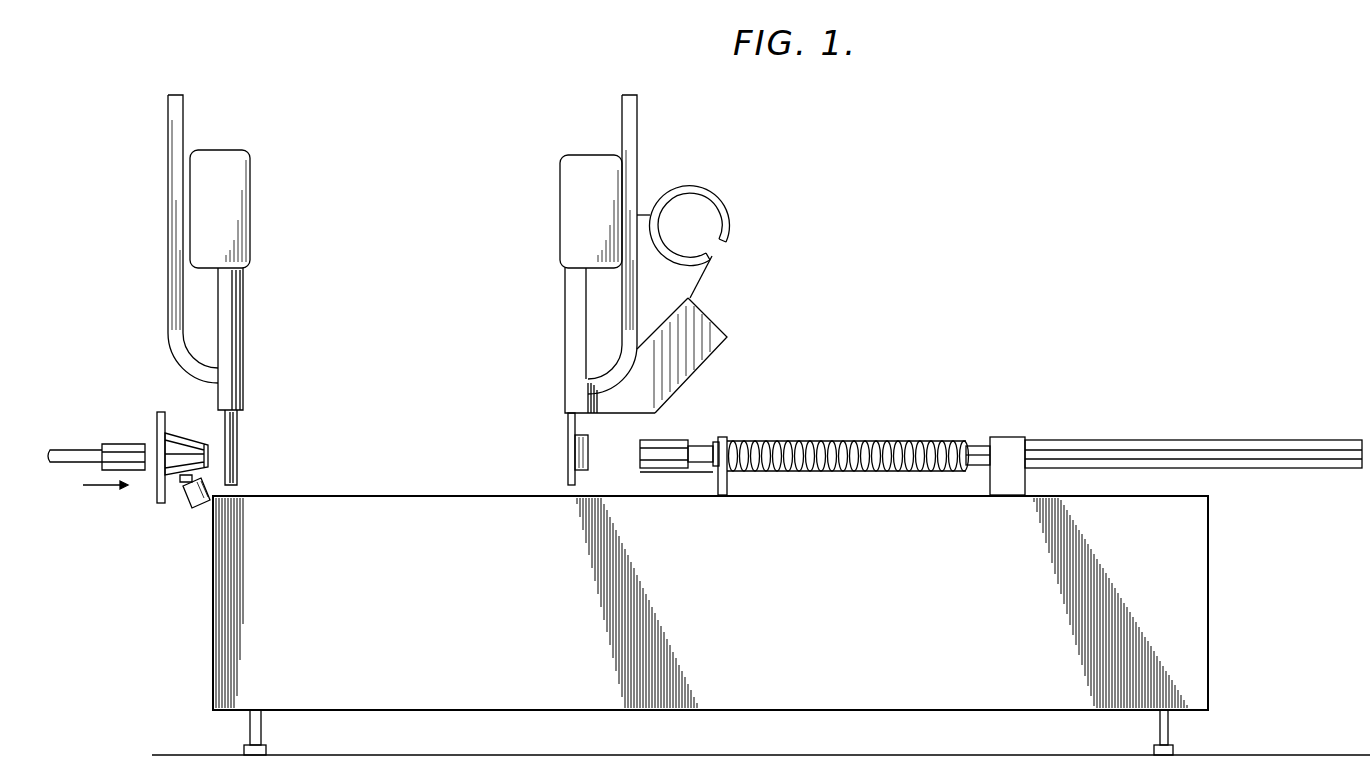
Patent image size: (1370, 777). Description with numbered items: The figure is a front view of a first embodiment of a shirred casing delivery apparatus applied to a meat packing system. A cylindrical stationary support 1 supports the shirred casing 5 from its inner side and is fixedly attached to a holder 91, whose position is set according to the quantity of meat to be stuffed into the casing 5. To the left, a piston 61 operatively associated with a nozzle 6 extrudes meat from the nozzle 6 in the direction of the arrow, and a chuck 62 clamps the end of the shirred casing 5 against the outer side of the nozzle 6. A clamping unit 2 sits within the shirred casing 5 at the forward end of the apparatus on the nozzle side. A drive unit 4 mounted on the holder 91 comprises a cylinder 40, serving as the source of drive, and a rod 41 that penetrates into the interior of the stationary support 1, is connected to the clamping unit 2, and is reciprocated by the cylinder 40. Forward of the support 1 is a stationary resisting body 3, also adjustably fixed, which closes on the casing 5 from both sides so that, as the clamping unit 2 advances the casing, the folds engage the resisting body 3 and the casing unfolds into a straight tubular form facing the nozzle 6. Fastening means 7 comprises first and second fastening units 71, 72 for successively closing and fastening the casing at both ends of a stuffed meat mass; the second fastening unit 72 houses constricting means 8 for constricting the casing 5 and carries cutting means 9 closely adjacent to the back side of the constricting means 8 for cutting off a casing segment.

The stationary support 1 is at (977, 447).
The clamping unit 2 is at (670, 452).
The stationary resisting body 3 is at (727, 497).
The drive unit 4 is at (928, 350).
The shirred casing 5 is at (852, 441).
The nozzle 6 is at (193, 443).
The fastening means 7 is at (428, 376).
The constricting means 8 is at (498, 430).
The cutting means 9 is at (588, 455).
The cylinder 40 is at (1060, 450).
The rod 41 is at (700, 445).
The piston 61 is at (121, 449).
The chuck 62 is at (184, 482).
The first fastening unit 71 is at (237, 445).
The second fastening unit 72 is at (575, 448).
The holder 91 is at (1008, 446).